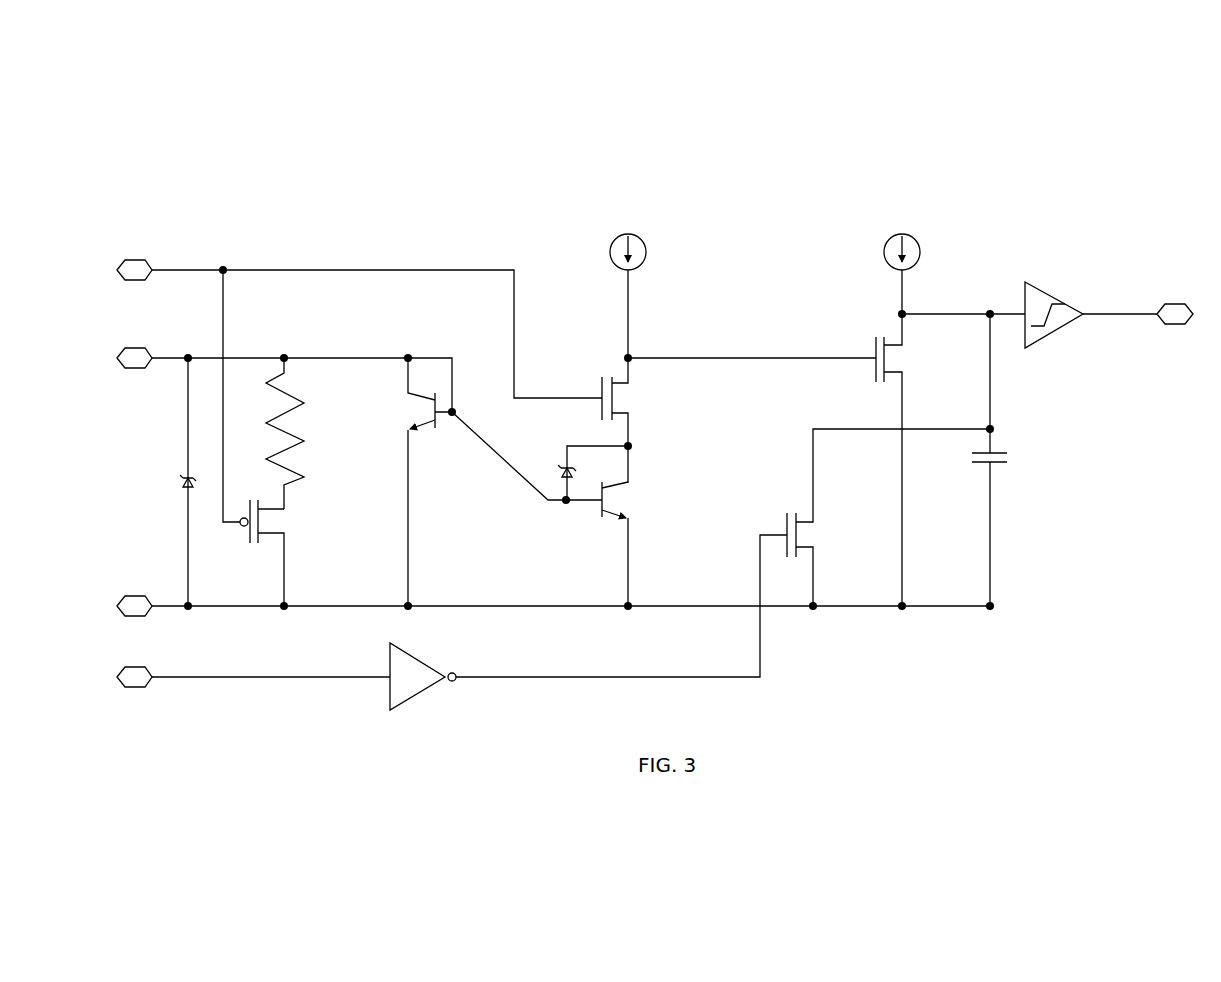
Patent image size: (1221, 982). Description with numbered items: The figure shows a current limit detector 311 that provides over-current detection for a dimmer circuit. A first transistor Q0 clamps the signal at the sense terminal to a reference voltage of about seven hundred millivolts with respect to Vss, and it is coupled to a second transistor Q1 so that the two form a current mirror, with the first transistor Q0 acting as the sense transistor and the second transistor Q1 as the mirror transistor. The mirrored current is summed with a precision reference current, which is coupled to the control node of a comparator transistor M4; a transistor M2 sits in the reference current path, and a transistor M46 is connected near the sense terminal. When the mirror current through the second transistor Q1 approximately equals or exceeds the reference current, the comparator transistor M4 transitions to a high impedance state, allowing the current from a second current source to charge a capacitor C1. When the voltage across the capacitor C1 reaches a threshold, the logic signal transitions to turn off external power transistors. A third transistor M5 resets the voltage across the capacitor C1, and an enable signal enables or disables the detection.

The current limit detector 311 is at (596, 114).
The transistor M2 is at (630, 376).
The comparator transistor M4 is at (904, 460).
The third transistor M5 is at (888, 517).
The transistor M46 is at (279, 553).
The first transistor Q0 is at (415, 482).
The second transistor Q1 is at (608, 544).
The capacitor C1 is at (1003, 460).